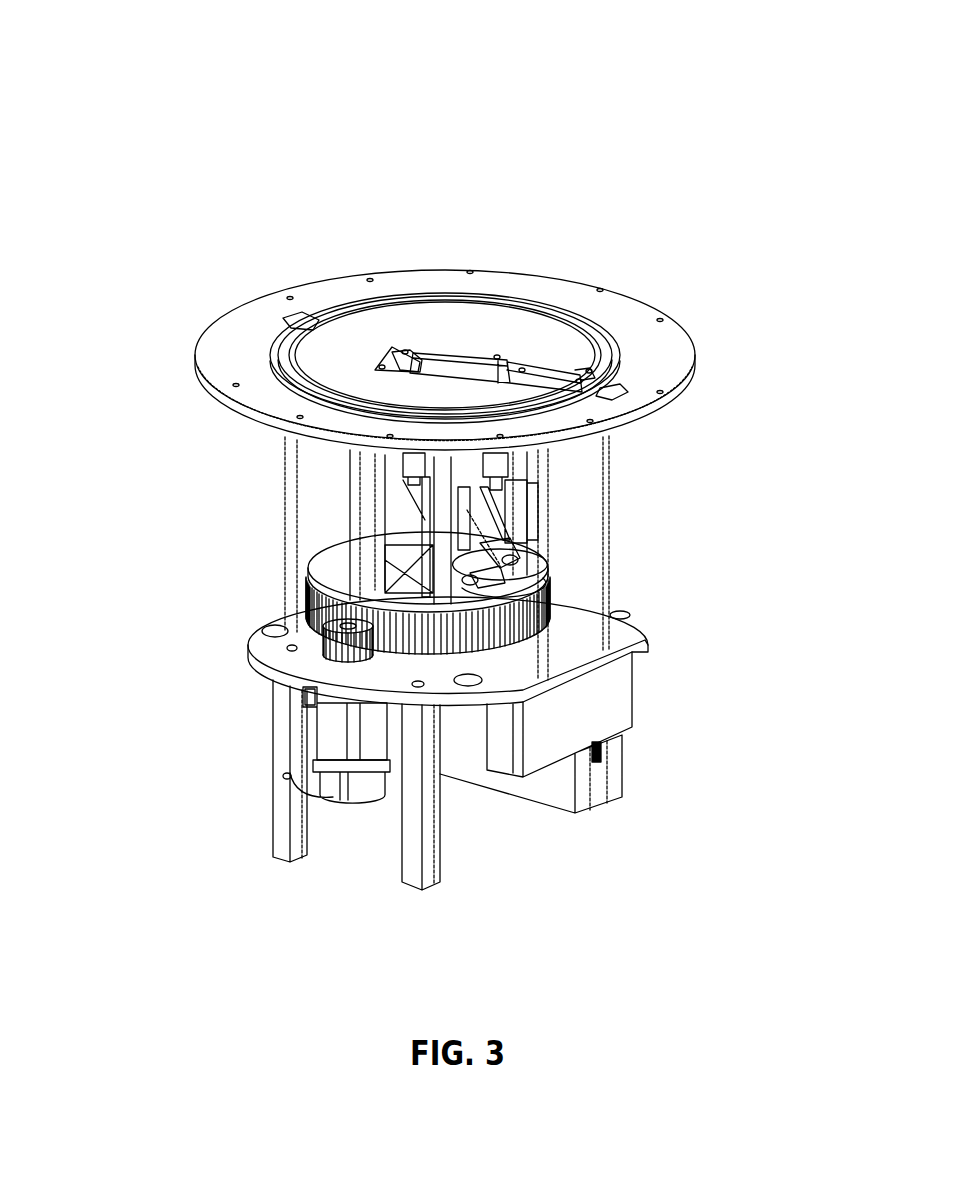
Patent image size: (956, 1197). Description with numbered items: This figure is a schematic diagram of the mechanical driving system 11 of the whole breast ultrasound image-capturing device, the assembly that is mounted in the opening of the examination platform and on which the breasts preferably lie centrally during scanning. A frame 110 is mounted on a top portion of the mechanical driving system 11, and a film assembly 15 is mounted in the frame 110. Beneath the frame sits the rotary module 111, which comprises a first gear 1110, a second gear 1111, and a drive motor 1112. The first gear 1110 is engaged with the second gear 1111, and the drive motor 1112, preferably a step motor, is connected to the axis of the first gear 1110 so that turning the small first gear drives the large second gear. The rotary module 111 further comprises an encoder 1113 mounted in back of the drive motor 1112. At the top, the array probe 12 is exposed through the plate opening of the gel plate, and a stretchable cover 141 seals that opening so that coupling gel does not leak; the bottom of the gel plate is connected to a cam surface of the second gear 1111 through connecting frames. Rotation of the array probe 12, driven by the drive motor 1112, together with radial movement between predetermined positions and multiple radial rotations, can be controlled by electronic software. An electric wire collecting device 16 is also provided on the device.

The mechanical driving system 11 is at (685, 92).
The array probe 12 is at (481, 353).
The film assembly 15 is at (590, 330).
The electric wire collecting device 16 is at (527, 560).
The frame 110 is at (230, 365).
The rotary module 111 is at (198, 603).
The cover 141 is at (392, 352).
The first gear 1110 is at (365, 658).
The second gear 1111 is at (560, 665).
The drive motor 1112 is at (327, 723).
The encoder 1113 is at (337, 780).